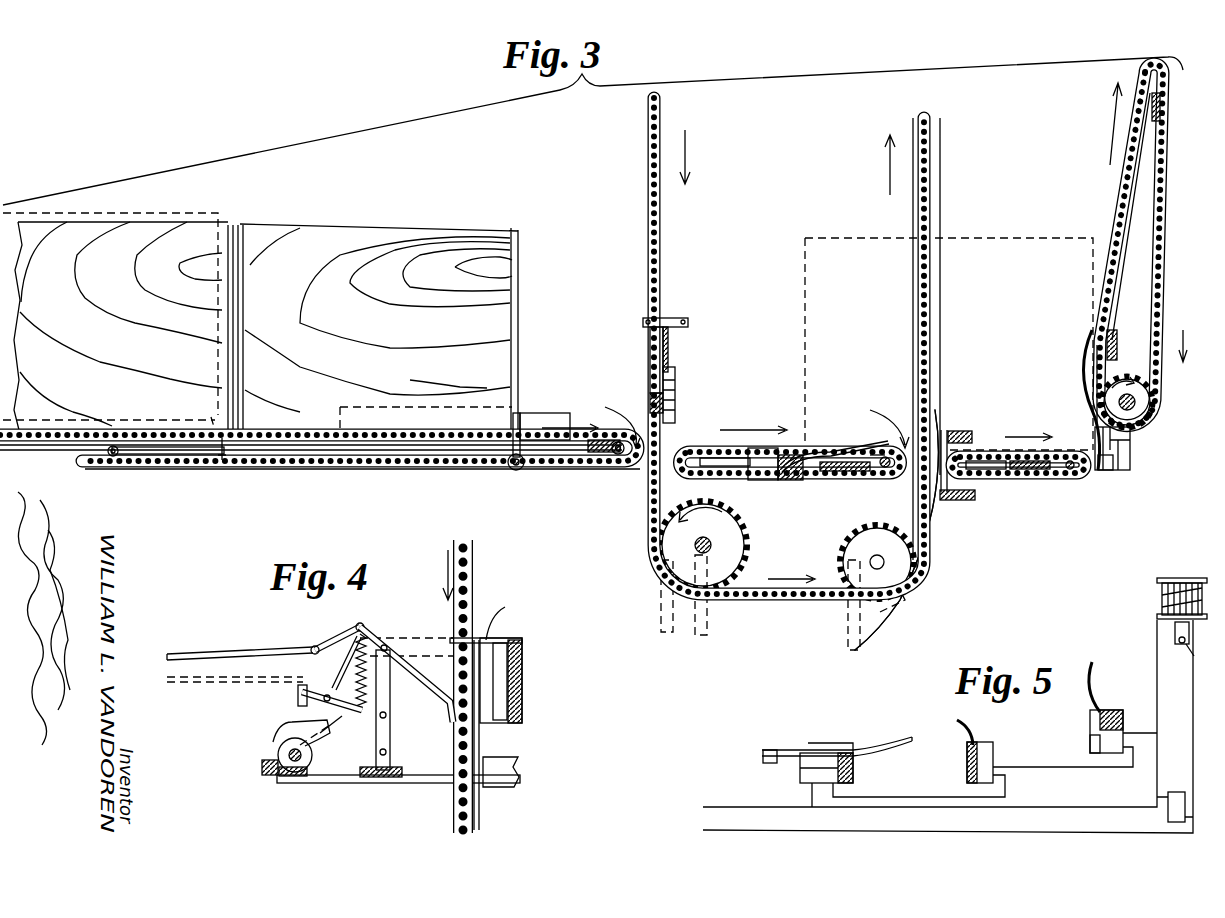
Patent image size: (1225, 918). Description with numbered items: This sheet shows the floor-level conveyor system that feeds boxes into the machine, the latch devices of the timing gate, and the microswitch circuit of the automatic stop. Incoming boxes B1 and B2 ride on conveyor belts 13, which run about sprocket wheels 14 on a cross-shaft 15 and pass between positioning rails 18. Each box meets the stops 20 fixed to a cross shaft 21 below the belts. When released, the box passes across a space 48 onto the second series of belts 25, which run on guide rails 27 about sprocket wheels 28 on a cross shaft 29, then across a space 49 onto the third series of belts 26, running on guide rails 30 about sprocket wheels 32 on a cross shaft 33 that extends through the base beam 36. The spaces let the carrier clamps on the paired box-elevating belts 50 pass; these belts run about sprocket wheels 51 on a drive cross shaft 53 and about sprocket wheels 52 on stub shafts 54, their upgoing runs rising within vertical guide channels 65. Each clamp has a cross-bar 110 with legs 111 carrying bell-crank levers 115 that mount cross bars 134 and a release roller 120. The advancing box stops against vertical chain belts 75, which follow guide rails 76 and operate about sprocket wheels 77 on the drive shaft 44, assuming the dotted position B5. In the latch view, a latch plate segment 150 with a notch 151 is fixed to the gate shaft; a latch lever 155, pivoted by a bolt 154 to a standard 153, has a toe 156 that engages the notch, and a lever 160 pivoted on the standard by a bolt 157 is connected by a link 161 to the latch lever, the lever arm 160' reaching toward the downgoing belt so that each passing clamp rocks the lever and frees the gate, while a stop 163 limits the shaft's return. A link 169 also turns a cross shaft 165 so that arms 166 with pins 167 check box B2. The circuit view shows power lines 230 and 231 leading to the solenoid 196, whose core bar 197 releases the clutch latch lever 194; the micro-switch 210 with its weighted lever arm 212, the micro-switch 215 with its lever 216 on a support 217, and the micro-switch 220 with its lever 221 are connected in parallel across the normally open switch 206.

In FIG. 3, the incoming box B1 is at (520, 300).
In FIG. 3, the incoming box B2 is at (233, 225).
In FIG. 3, the stopped box position B5 is at (1012, 238).
In FIG. 3, the conveyor belts 13 is at (318, 465).
In FIG. 3, the sprocket wheels 14 is at (600, 456).
In FIG. 3, the cross-shaft 15 is at (618, 456).
In FIG. 3, the positioning rails 18 is at (382, 407).
In FIG. 3, the stops 20 is at (518, 412).
In FIG. 4, the stops 20 is at (325, 725).
In FIG. 3, the cross shaft 21 is at (508, 468).
In FIG. 4, the cross shaft 21 is at (268, 765).
In FIG. 3, the conveyor belts of second series 25 is at (710, 446).
In FIG. 3, the conveyor belts of third series 26 is at (988, 450).
In FIG. 3, the guide rails 27 is at (835, 475).
In FIG. 3, the sprocket wheels 28 is at (858, 475).
In FIG. 3, the cross shaft 29 is at (885, 468).
In FIG. 3, the guide rails 30 is at (1010, 472).
In FIG. 3, the sprocket wheels 32 is at (1040, 472).
In FIG. 3, the cross shaft 33 is at (1080, 470).
In FIG. 4, the base beam 36 is at (520, 770).
In FIG. 3, the drive shaft 44 is at (1136, 408).
In FIG. 3, the space between conveyor series 48 is at (611, 420).
In FIG. 3, the space between conveyor series 49 is at (907, 440).
In FIG. 3, the box-elevating belts 50 is at (648, 165).
In FIG. 4, the box-elevating belts 50 is at (478, 568).
In FIG. 3, the sprocket wheels 51 is at (660, 556).
In FIG. 3, the sprocket wheels 52 is at (915, 572).
In FIG. 3, the cross shaft 53 is at (662, 590).
In FIG. 3, the stub shafts 54 is at (930, 595).
In FIG. 3, the vertical guide channels 65 is at (944, 324).
In FIG. 3, the vertically operating chain belts 75 is at (1112, 178).
In FIG. 3, the vertical guide rails 76 is at (1130, 218).
In FIG. 3, the sprocket wheels 77 is at (1152, 396).
In FIG. 3, the cross-bar 110 is at (648, 398).
In FIG. 3, the legs 111 is at (650, 347).
In FIG. 3, the bell-crank levers 115 is at (670, 336).
In FIG. 3, the roller 120 is at (680, 405).
In FIG. 4, the roller 120 is at (500, 795).
In FIG. 3, the cross bars 134 is at (672, 318).
In FIG. 4, the latch plate segment 150 is at (275, 740).
In FIG. 4, the peripheral notch 151 is at (305, 778).
In FIG. 4, the standard 153 is at (372, 780).
In FIG. 4, the pivot bolt 154 is at (392, 715).
In FIG. 4, the latch lever 155 is at (368, 690).
In FIG. 4, the toe 156 is at (300, 685).
In FIG. 4, the pivot bolt 157 is at (385, 642).
In FIG. 4, the lever 160 is at (406, 663).
In FIG. 4, the lever arm 160' is at (337, 622).
In FIG. 4, the link 161 is at (322, 640).
In FIG. 4, the stop 163 is at (278, 752).
In FIG. 3, the cross shaft 165 is at (110, 448).
In FIG. 3, the arms 166 is at (168, 455).
In FIG. 3, the pins 167 is at (224, 462).
In FIG. 4, the link 169 is at (200, 652).
In FIG. 5, the latch lever 194 is at (1190, 648).
In FIG. 5, the solenoid 196 is at (1175, 637).
In FIG. 5, the core bar 197 is at (1157, 600).
In FIG. 5, the micro-switch 206 is at (1177, 792).
In FIG. 3, the micro-switch 210 is at (770, 470).
In FIG. 5, the micro-switch 210 is at (855, 772).
In FIG. 3, the weighted lever arm 212 is at (815, 445).
In FIG. 5, the weighted lever arm 212 is at (887, 735).
In FIG. 3, the micro-switch 215 is at (1132, 452).
In FIG. 5, the micro-switch 215 is at (1118, 758).
In FIG. 3, the switch lever 216 is at (1082, 368).
In FIG. 5, the switch lever 216 is at (1100, 692).
In FIG. 3, the support 217 is at (1115, 468).
In FIG. 5, the support 217 is at (1092, 745).
In FIG. 5, the micro-switch 220 is at (995, 765).
In FIG. 5, the switch lever 221 is at (970, 740).
In FIG. 5, the power circuit line 230 is at (703, 805).
In FIG. 5, the power circuit line 231 is at (703, 829).